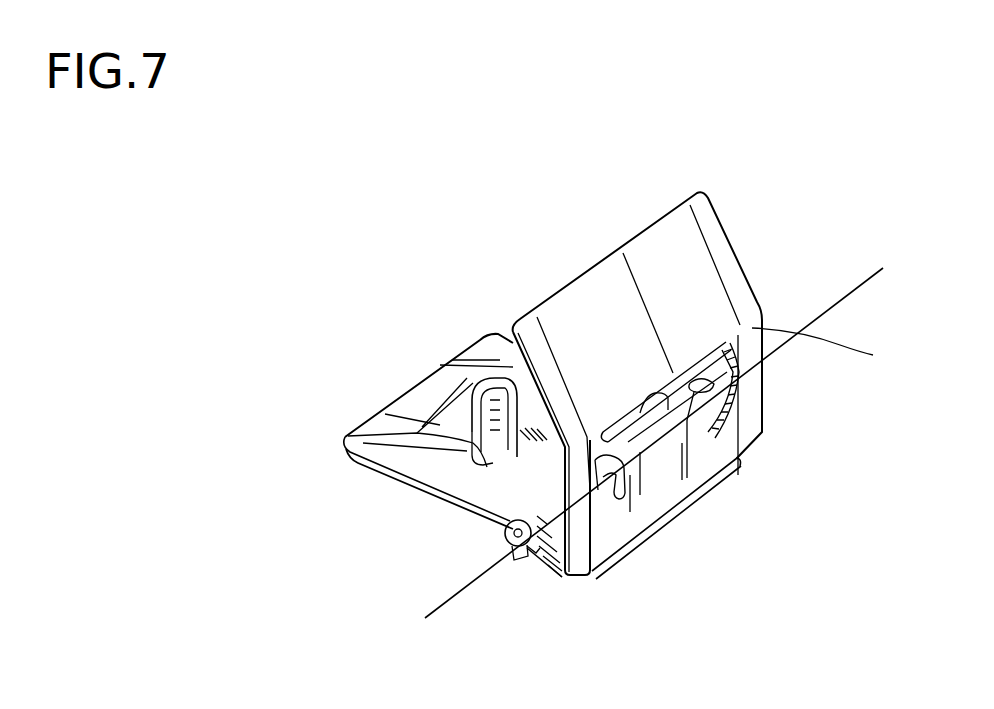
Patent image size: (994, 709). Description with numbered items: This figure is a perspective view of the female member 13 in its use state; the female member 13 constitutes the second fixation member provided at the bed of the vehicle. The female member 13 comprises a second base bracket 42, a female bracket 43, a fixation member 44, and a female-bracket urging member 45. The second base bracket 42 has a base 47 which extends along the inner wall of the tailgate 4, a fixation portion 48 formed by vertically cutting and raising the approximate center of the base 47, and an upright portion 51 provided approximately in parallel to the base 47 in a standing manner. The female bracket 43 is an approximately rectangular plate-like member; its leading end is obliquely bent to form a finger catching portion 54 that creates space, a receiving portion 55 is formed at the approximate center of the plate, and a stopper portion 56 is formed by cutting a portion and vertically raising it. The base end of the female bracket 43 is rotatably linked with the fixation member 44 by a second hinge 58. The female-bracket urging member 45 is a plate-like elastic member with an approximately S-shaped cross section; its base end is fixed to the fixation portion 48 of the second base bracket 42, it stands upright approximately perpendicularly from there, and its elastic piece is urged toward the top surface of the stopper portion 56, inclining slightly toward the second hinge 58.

The female member 13 is at (594, 444).
The tailgate 4 is at (353, 587).
The second base bracket 42 is at (452, 477).
The female bracket 43 is at (693, 287).
The fixation member 44 is at (530, 547).
The female-bracket urging member 45 is at (633, 420).
The base 47 is at (415, 402).
The fixation portion 48 is at (367, 437).
The upright portion 51 is at (663, 527).
The finger catching portion 54 is at (648, 613).
The receiving portion 55 is at (735, 393).
The stopper portion 56 is at (633, 443).
The second hinge 58 is at (510, 540).